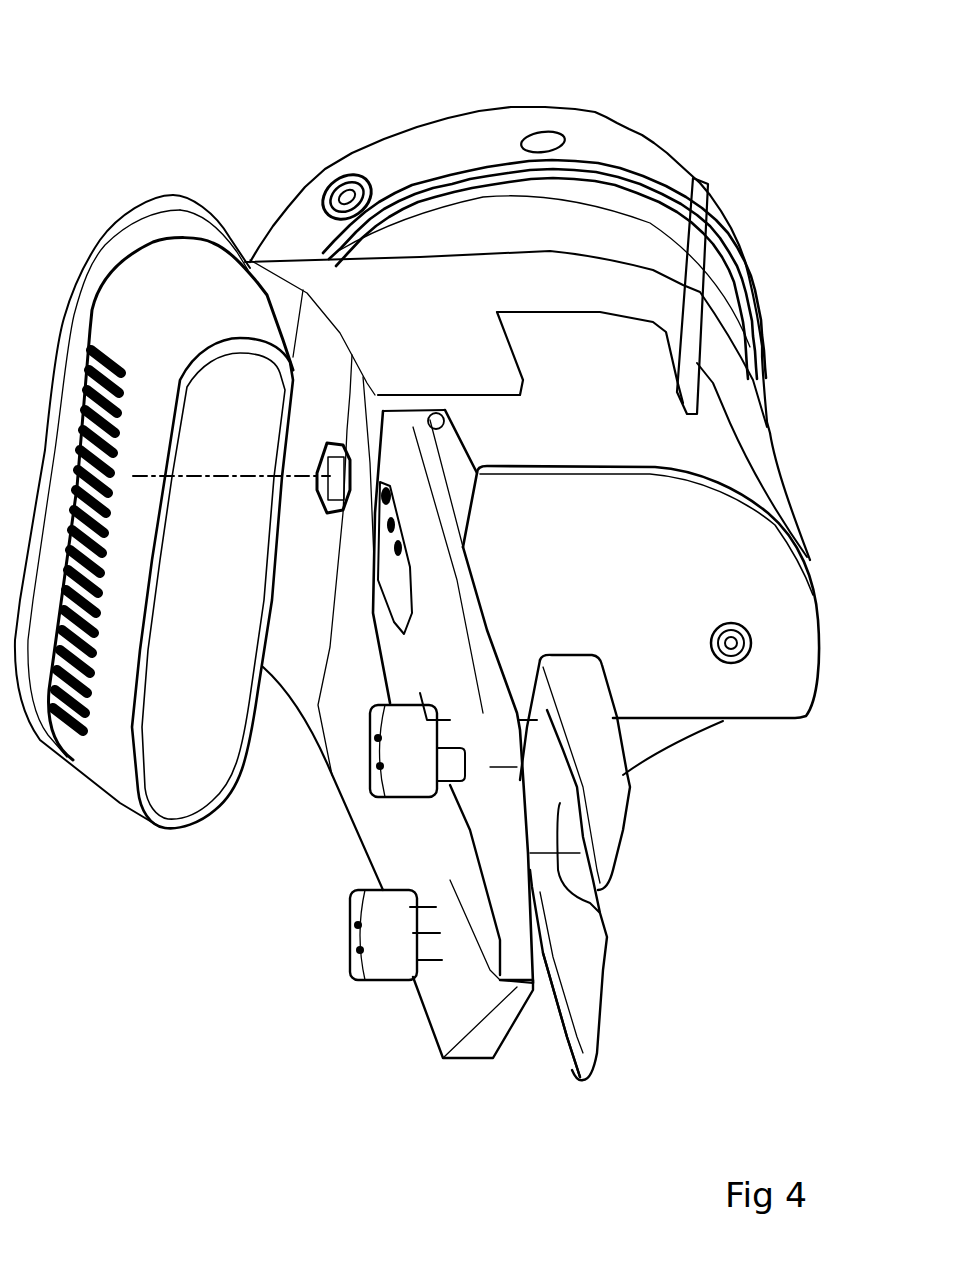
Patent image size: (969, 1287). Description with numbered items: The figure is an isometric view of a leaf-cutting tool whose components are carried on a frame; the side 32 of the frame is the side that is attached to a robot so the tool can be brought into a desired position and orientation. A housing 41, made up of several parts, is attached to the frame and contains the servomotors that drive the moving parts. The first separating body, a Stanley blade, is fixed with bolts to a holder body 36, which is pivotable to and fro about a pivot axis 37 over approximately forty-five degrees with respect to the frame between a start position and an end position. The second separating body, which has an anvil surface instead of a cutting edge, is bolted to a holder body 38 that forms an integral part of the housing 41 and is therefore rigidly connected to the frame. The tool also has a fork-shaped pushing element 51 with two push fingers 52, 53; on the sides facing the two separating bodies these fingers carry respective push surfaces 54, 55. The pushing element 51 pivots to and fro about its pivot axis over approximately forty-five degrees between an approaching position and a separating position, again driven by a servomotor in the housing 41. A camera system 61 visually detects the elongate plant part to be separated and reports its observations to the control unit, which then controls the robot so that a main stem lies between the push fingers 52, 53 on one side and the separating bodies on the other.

The side 32 is at (319, 96).
The holder body 36 is at (433, 657).
The pivot axis 37 is at (237, 476).
The holder body 38 is at (403, 858).
The housing 41 is at (707, 557).
The pushing element 51 is at (607, 896).
The push finger 52 is at (603, 777).
The push finger 53 is at (587, 983).
The push surface 54 is at (600, 913).
The push surface 55 is at (557, 1013).
The camera system 61 is at (212, 651).